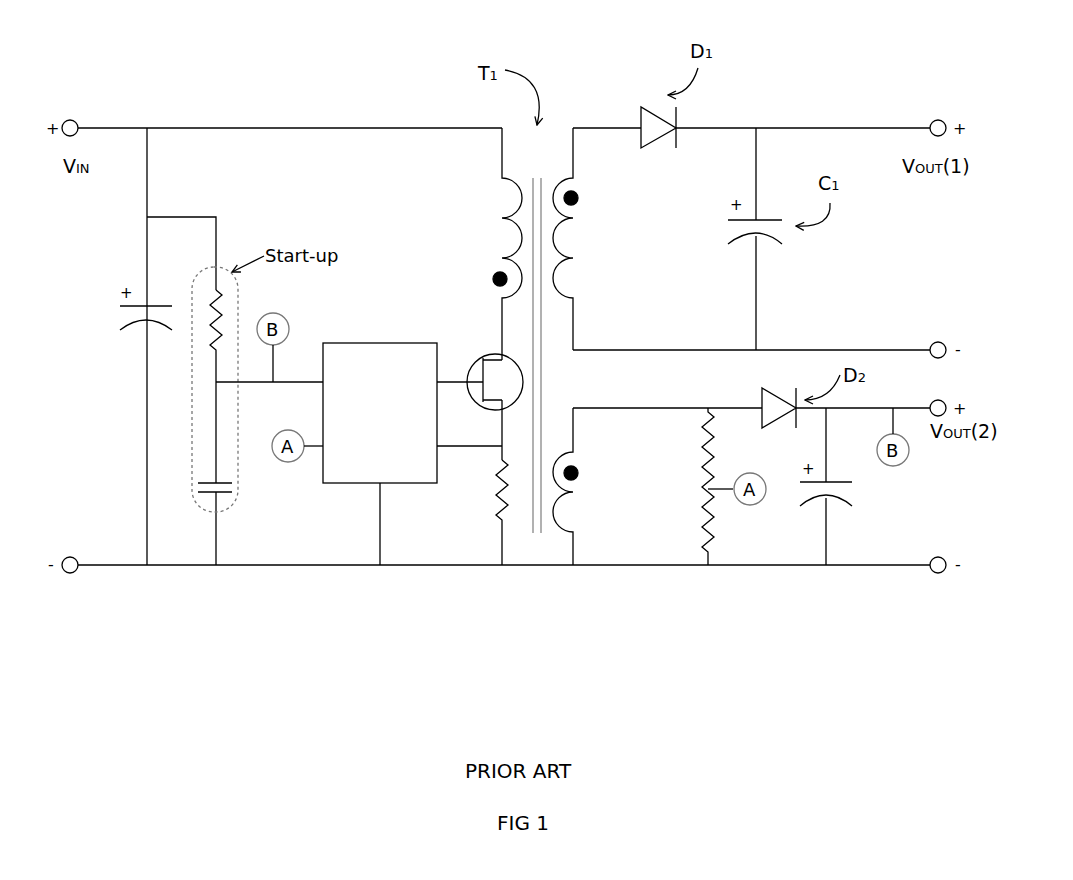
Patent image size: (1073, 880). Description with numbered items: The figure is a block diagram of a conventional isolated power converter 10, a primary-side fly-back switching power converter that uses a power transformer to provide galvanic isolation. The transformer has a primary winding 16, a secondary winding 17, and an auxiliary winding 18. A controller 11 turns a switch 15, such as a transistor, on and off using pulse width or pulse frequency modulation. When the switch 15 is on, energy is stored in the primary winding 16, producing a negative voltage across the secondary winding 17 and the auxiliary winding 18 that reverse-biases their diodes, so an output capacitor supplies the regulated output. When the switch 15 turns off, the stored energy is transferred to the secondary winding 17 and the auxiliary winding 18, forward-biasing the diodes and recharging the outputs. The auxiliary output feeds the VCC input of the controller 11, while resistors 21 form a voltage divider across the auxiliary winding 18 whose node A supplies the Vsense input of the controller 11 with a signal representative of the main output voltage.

The isolated power converter 10 is at (393, 636).
The controller 11 is at (345, 338).
The switch 15 is at (486, 348).
The primary winding 16 is at (503, 240).
The secondary winding 17 is at (588, 240).
The auxiliary winding 18 is at (588, 504).
The resistors 21 is at (697, 522).